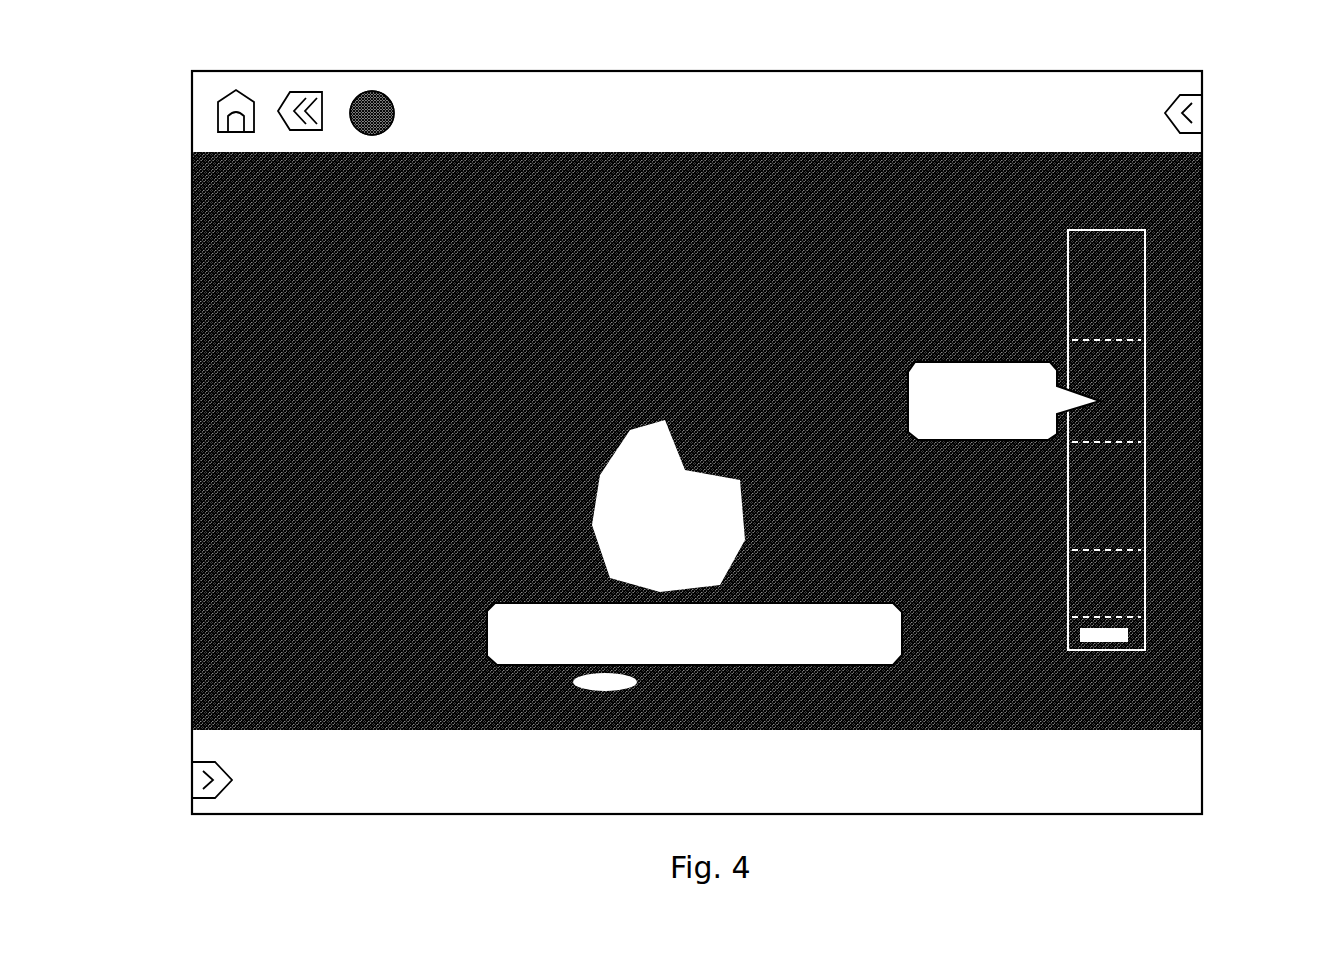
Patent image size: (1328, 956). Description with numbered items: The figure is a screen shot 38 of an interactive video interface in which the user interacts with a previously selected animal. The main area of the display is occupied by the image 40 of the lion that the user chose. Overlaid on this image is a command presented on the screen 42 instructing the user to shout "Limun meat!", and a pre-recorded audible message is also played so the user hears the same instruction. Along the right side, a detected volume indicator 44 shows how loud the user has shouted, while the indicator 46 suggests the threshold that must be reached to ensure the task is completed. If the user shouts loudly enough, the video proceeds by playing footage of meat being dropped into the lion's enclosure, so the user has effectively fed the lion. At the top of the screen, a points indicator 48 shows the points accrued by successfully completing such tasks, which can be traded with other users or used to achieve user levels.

The screen shot 38 is at (140, 471).
The image 40 is at (230, 640).
The screen command 42 is at (880, 663).
The detected volume indicator 44 is at (1145, 508).
The threshold indicator 46 is at (1045, 378).
The points indicator 48 is at (372, 95).